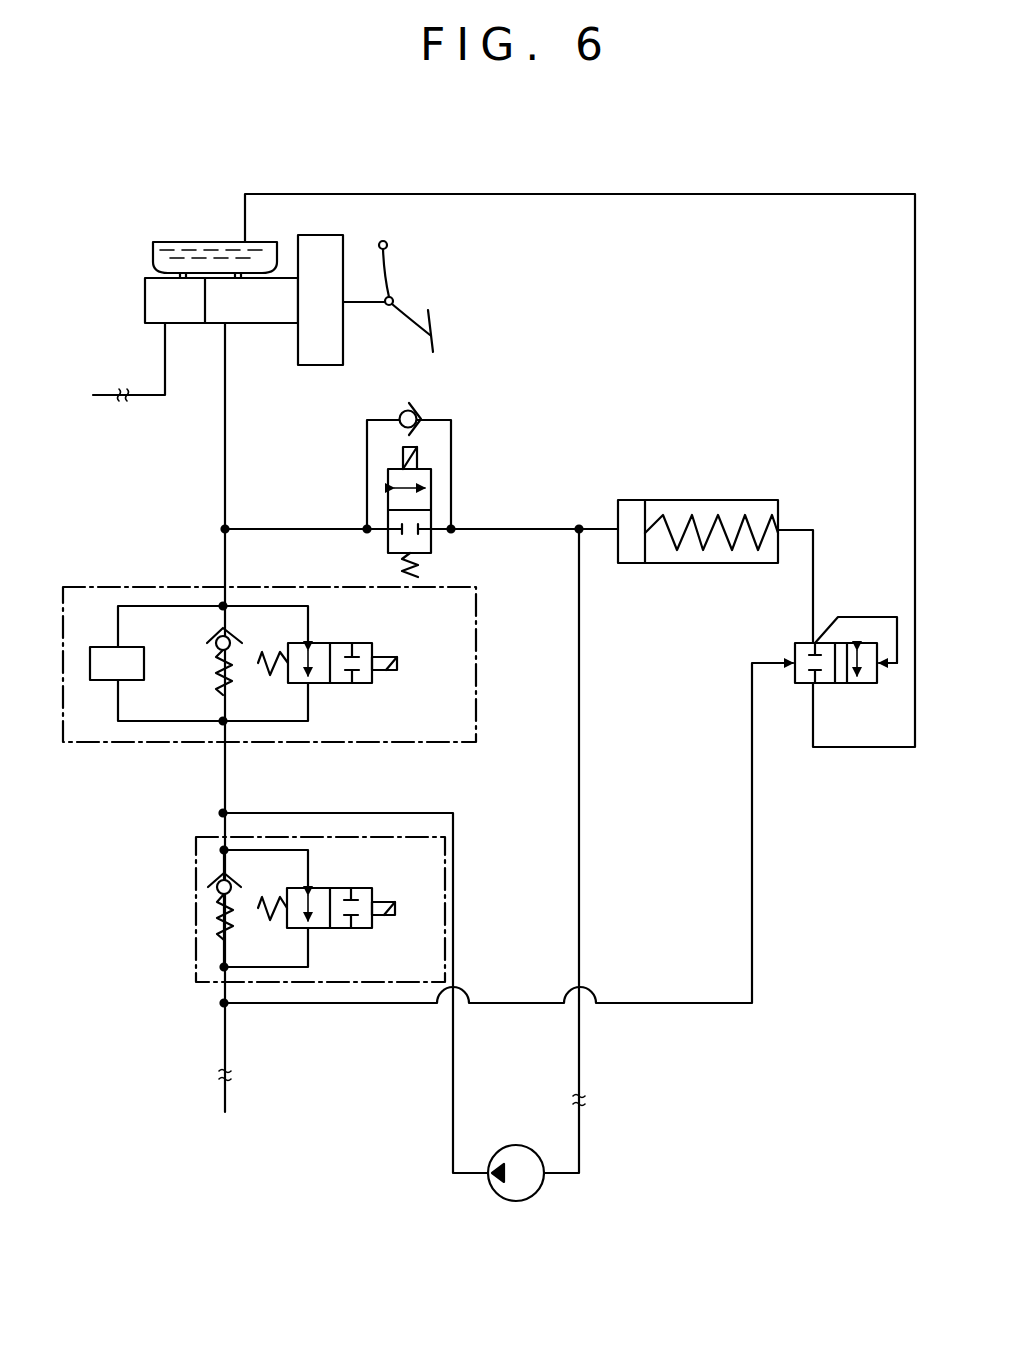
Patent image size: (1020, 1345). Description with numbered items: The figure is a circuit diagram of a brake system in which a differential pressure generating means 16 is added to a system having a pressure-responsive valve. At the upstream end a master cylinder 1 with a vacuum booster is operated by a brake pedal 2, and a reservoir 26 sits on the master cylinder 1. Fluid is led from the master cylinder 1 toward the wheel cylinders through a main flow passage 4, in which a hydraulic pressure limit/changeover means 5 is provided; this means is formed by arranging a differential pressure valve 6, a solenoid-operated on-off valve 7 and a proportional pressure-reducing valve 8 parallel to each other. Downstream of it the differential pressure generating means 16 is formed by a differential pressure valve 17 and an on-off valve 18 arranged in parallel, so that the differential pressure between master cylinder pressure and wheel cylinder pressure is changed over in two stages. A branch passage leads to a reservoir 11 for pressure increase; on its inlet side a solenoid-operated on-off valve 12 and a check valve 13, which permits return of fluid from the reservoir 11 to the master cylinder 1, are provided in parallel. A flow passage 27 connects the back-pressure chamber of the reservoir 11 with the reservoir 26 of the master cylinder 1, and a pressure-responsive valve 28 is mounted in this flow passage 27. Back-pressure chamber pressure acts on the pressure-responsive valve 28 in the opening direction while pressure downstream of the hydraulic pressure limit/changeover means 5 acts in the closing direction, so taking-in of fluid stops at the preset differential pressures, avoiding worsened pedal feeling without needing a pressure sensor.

The master cylinder 1 is at (155, 302).
The brake pedal 2 is at (403, 312).
The main flow passage 4 is at (225, 423).
The hydraulic pressure limit/changeover means 5 is at (124, 583).
The differential pressure valve 6 is at (218, 648).
The solenoid-operated on-off valve 7 is at (340, 683).
The proportional pressure-reducing valve 8 is at (107, 682).
The reservoir for pressure increase 11 is at (695, 500).
The solenoid-operated on-off valve 12 is at (425, 503).
The check valve 13 is at (413, 413).
The differential pressure generating means 16 is at (193, 934).
The differential pressure valve 17 is at (217, 883).
The on-off valve 18 is at (337, 928).
The reservoir 26 is at (200, 247).
The flow passage 27 is at (737, 195).
The pressure-responsive valve 28 is at (840, 683).